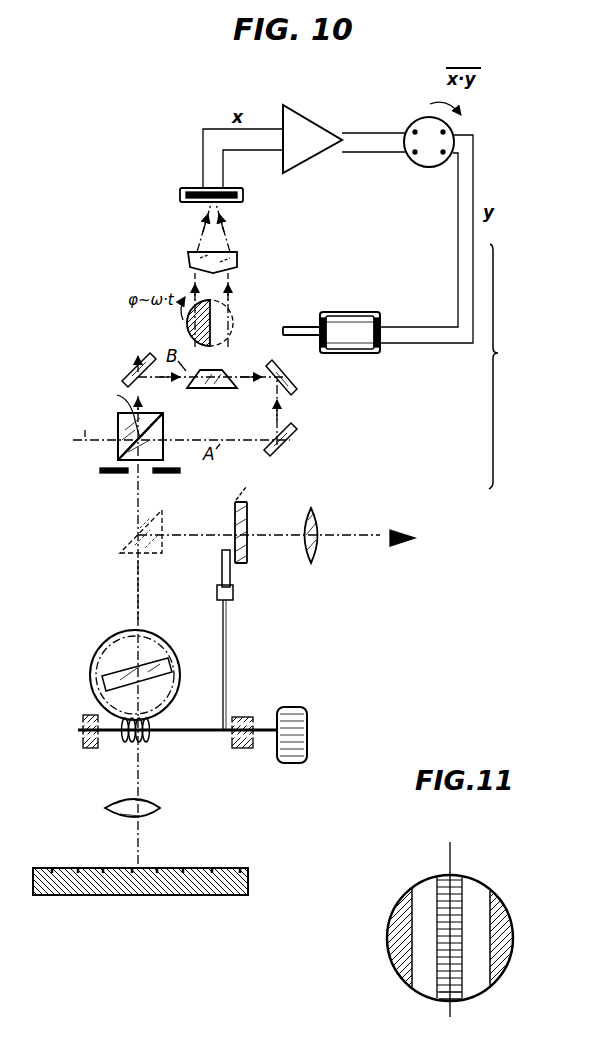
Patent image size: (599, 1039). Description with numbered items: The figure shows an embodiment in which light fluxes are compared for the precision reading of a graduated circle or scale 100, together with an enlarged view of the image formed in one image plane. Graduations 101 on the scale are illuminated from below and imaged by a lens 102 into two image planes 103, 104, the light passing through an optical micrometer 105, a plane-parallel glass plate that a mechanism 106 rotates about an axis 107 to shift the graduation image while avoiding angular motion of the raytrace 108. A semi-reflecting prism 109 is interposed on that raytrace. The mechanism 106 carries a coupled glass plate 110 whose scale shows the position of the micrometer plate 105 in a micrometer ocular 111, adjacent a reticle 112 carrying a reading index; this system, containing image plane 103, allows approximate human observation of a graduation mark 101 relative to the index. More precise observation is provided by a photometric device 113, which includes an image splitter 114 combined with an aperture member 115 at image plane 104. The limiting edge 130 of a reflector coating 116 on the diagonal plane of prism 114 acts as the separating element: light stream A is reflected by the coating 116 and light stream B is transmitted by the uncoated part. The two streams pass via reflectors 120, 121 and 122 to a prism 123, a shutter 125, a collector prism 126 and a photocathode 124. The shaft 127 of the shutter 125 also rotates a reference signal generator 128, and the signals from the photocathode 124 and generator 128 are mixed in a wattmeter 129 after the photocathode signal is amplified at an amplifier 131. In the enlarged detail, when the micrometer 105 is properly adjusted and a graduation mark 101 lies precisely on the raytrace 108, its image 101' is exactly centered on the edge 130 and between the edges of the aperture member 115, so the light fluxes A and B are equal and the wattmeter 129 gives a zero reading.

In FIG. 10, the scale 100 is at (165, 884).
In FIG. 10, the graduations 101 is at (146, 853).
In FIG. 11, the graduations 101 is at (427, 928).
In FIG. 11, the image of graduation mark 101' is at (426, 1010).
In FIG. 10, the lens 102 is at (155, 808).
In FIG. 10, the image plane 103 is at (255, 484).
In FIG. 10, the image plane 104 is at (81, 424).
In FIG. 10, the optical micrometer 105 is at (168, 664).
In FIG. 10, the mechanism 106 is at (147, 743).
In FIG. 10, the axis 107 is at (131, 672).
In FIG. 10, the raytrace 108 is at (136, 589).
In FIG. 10, the semi-reflecting prism 109 is at (125, 545).
In FIG. 10, the glass plate 110 is at (221, 576).
In FIG. 10, the micrometer ocular 111 is at (316, 552).
In FIG. 10, the reticle 112 is at (248, 513).
In FIG. 10, the photometric device 113 is at (513, 366).
In FIG. 10, the image splitter 114 is at (164, 432).
In FIG. 10, the aperture member 115 is at (114, 473).
In FIG. 11, the aperture member 115 is at (390, 948).
In FIG. 10, the reflector coating 116 is at (118, 457).
In FIG. 10, the reflector 120 is at (294, 446).
In FIG. 10, the reflector 121 is at (295, 385).
In FIG. 10, the reflector 122 is at (143, 360).
In FIG. 10, the prism 123 is at (224, 388).
In FIG. 10, the photocathode 124 is at (183, 192).
In FIG. 10, the shutter 125 is at (214, 332).
In FIG. 10, the collector prism 126 is at (190, 258).
In FIG. 10, the shaft 127 is at (297, 326).
In FIG. 10, the reference signal generator 128 is at (366, 314).
In FIG. 10, the wattmeter 129 is at (430, 168).
In FIG. 10, the limiting edge 130 is at (114, 409).
In FIG. 11, the limiting edge 130 is at (452, 853).
In FIG. 10, the amplifier 131 is at (305, 118).